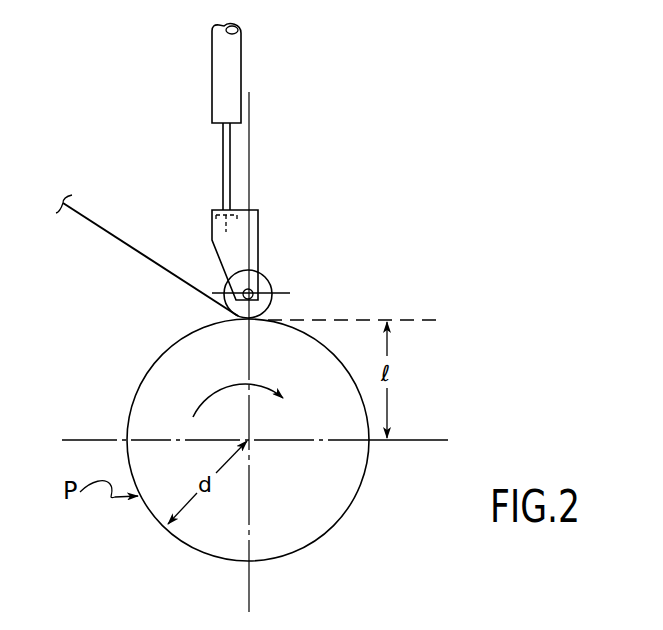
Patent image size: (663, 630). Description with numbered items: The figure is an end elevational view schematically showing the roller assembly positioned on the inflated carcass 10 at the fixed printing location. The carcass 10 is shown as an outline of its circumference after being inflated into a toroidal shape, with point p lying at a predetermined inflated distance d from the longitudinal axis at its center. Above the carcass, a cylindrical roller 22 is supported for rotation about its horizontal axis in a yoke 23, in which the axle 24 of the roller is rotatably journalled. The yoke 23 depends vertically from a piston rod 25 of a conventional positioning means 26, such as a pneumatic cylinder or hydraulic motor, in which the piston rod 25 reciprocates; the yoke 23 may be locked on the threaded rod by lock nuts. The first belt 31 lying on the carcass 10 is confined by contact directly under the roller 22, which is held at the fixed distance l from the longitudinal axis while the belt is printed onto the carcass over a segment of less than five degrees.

The first stage carcass 10 is at (346, 518).
The cylindrical roller 22 is at (267, 278).
The yoke 23 is at (237, 253).
The axle 24 is at (258, 302).
The piston rod 25 is at (223, 160).
The positioning means 26 is at (228, 67).
The first belt 31 is at (110, 233).